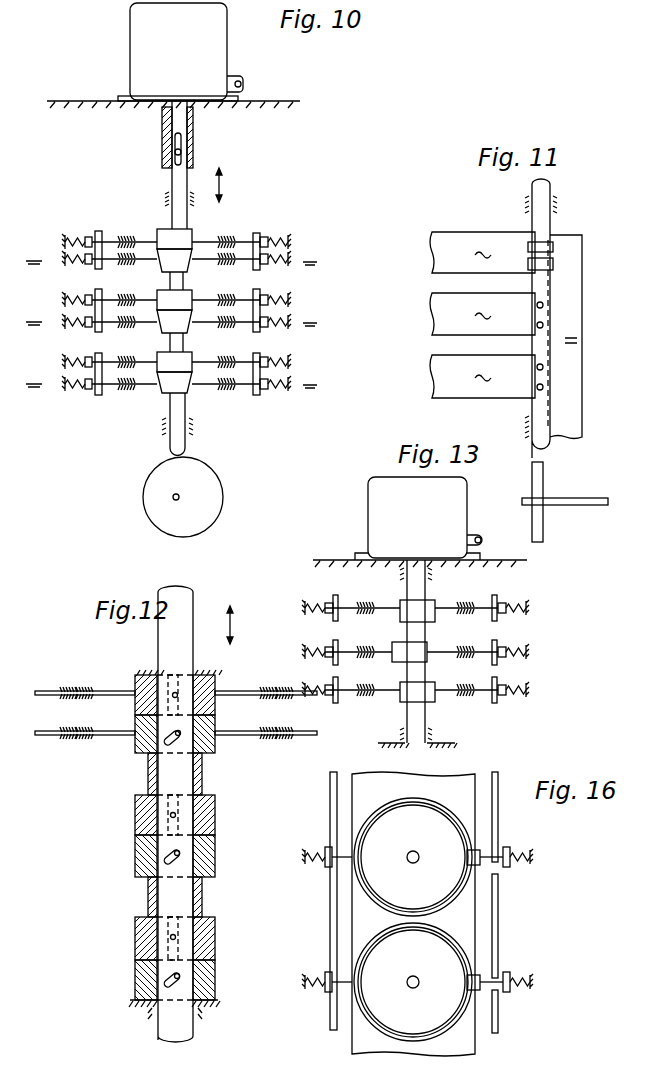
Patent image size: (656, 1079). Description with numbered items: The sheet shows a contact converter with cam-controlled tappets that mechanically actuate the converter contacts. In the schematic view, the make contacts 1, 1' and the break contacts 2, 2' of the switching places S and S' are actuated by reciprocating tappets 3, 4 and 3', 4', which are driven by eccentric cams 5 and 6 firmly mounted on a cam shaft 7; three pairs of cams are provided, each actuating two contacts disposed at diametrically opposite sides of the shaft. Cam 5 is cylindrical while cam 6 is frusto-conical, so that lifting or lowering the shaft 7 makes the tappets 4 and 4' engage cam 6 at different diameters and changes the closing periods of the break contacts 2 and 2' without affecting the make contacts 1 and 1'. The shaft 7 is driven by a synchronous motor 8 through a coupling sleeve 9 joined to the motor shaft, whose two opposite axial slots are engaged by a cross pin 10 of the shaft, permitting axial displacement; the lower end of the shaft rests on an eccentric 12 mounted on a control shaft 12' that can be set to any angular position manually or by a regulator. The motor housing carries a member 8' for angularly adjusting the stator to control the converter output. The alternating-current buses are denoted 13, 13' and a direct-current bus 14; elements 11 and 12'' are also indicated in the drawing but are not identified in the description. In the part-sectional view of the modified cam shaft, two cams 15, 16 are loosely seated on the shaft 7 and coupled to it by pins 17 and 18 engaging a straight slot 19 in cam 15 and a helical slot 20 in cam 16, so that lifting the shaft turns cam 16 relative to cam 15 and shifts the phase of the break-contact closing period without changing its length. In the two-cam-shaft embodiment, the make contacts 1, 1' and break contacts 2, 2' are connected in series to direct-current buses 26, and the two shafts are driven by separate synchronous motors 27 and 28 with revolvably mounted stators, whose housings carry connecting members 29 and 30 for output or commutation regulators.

In FIG. 10, the make contact 1 is at (272, 224).
In FIG. 11, the make contact 1 is at (558, 234).
In FIG. 13, the make contact 1 is at (517, 598).
In FIG. 16, the make contact 1 is at (519, 867).
In FIG. 10, the make contact 1' is at (73, 225).
In FIG. 13, the make contact 1' is at (320, 599).
In FIG. 16, the make contact 1' is at (325, 840).
In FIG. 10, the break contact 2 is at (269, 273).
In FIG. 11, the break contact 2 is at (569, 243).
In FIG. 16, the break contact 2 is at (518, 987).
In FIG. 10, the break contact 2' is at (77, 271).
In FIG. 16, the break contact 2' is at (325, 996).
In FIG. 10, the tappet 3 is at (226, 225).
In FIG. 12, the tappet 3 is at (266, 705).
In FIG. 10, the tappet 3' is at (124, 225).
In FIG. 12, the tappet 3' is at (85, 679).
In FIG. 10, the tappet 4 is at (226, 272).
In FIG. 12, the tappet 4 is at (266, 748).
In FIG. 10, the tappet 4' is at (124, 272).
In FIG. 12, the tappet 4' is at (85, 745).
In FIG. 10, the eccentric cam 5 is at (178, 240).
In FIG. 10, the eccentric cam 6 is at (183, 258).
In FIG. 10, the cam shaft 7 is at (172, 183).
In FIG. 12, the cam shaft 7 is at (166, 643).
In FIG. 10, the synchronous motor 8 is at (166, 52).
In FIG. 10, the member 8' is at (244, 71).
In FIG. 10, the coupling sleeve 9 is at (162, 129).
In FIG. 10, the cross pin 10 is at (175, 152).
In FIG. 10, the spring 11 is at (280, 243).
In FIG. 10, the eccentric 12 is at (198, 497).
In FIG. 11, the eccentric 12 is at (563, 502).
In FIG. 10, the control shaft 12' is at (139, 497).
In FIG. 11, the crank arm 12'' is at (565, 518).
In FIG. 10, the alternating-current bus 13 is at (260, 236).
In FIG. 11, the alternating-current bus 13 is at (466, 315).
In FIG. 10, the alternating-current bus 13' is at (94, 235).
In FIG. 11, the direct-current bus 14 is at (575, 362).
In FIG. 12, the cam 15 is at (205, 690).
In FIG. 12, the cam 16 is at (205, 742).
In FIG. 12, the coupling pin 17 is at (172, 696).
In FIG. 12, the coupling pin 18 is at (170, 744).
In FIG. 12, the slot 19 is at (180, 686).
In FIG. 12, the slot 20 is at (182, 736).
In FIG. 13, the direct-current bus 26 is at (492, 600).
In FIG. 16, the synchronous motor 27 is at (372, 870).
In FIG. 13, the synchronous motor 28 is at (384, 508).
In FIG. 16, the synchronous motor 28 is at (378, 958).
In FIG. 16, the connecting member 29 is at (476, 855).
In FIG. 13, the connecting member 30 is at (478, 535).
In FIG. 16, the connecting member 30 is at (476, 978).
In FIG. 10, the switching place S is at (310, 314).
In FIG. 10, the switching place S' is at (36, 313).